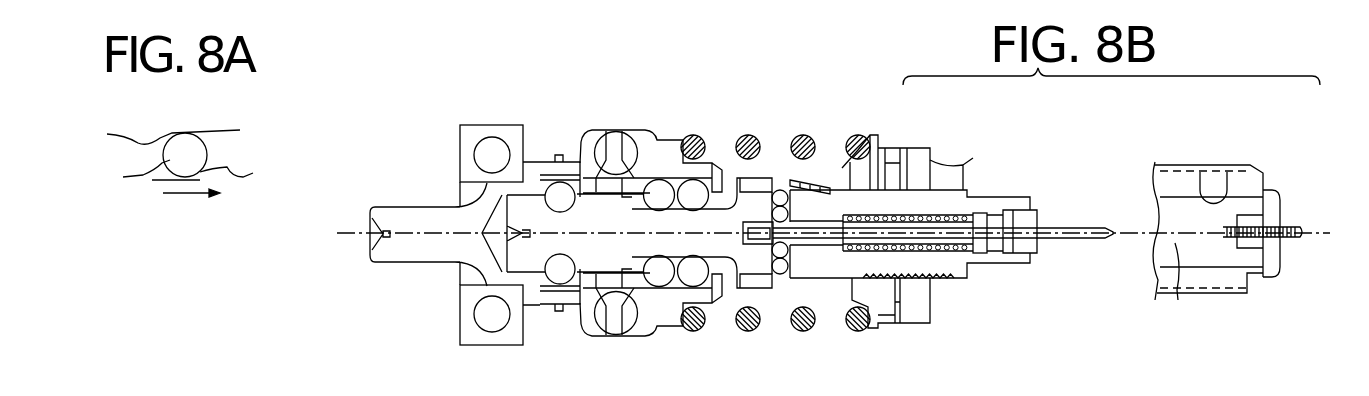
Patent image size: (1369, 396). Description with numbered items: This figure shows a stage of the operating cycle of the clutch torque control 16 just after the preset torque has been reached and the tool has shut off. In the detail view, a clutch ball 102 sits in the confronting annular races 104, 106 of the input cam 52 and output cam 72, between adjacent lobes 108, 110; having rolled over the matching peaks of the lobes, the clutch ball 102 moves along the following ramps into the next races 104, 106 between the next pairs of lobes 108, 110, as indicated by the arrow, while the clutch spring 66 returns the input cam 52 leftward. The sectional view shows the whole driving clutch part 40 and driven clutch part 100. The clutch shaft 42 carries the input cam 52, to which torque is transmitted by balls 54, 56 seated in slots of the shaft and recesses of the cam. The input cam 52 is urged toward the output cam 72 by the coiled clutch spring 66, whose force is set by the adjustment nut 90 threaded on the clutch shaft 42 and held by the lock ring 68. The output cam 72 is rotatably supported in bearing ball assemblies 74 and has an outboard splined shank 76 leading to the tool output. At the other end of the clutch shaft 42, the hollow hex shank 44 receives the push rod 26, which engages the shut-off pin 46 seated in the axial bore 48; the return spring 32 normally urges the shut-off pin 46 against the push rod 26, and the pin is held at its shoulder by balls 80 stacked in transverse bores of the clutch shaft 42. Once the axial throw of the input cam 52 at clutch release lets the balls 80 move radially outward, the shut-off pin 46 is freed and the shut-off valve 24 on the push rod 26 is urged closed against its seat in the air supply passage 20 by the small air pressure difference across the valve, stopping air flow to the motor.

In FIG. 8B, the clutch torque control 16 is at (968, 135).
In FIG. 8B, the air supply passage 20 is at (1223, 200).
In FIG. 8B, the shut-off valve 24 is at (1285, 200).
In FIG. 8B, the push rod 26 is at (1070, 242).
In FIG. 8B, the return spring 32 is at (960, 267).
In FIG. 8B, the driving clutch part 40 is at (972, 190).
In FIG. 8B, the clutch shaft 42 is at (930, 280).
In FIG. 8B, the hex shank 44 is at (1038, 200).
In FIG. 8B, the shut-off pin 46 is at (880, 216).
In FIG. 8B, the axial bore 48 is at (803, 223).
In FIG. 8B, the input cam 52 is at (656, 133).
In FIG. 8B, the ball 54 is at (710, 170).
In FIG. 8B, the ball 56 is at (715, 310).
In FIG. 8B, the clutch spring 66 is at (865, 133).
In FIG. 8B, the lock ring 68 is at (878, 327).
In FIG. 8B, the output cam 72 is at (588, 133).
In FIG. 8B, the bearing ball assemblies 74 is at (462, 340).
In FIG. 8B, the splined shank 76 is at (398, 220).
In FIG. 8B, the balls 80 is at (795, 180).
In FIG. 8B, the adjustment nut 90 is at (965, 163).
In FIG. 8B, the driven clutch part 100 is at (423, 203).
In FIG. 8A, the clutch ball 102 is at (170, 158).
In FIG. 8B, the clutch ball 102 is at (613, 330).
In FIG. 8A, the annular race 104 is at (240, 175).
In FIG. 8A, the annular race 106 is at (214, 137).
In FIG. 8A, the lobe 108 is at (233, 165).
In FIG. 8A, the lobe 110 is at (128, 147).